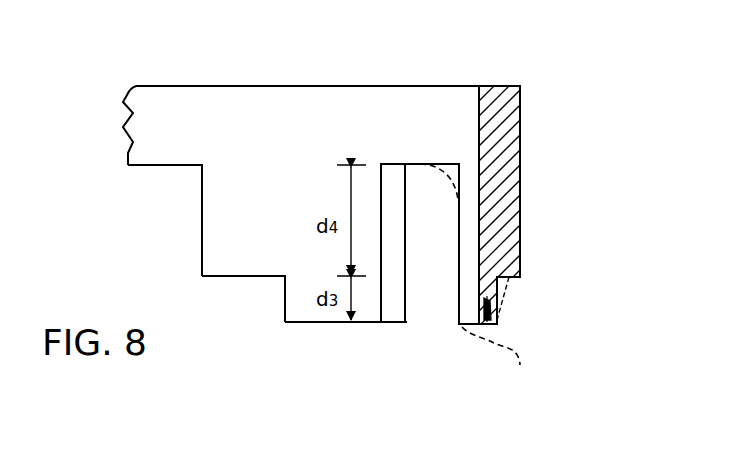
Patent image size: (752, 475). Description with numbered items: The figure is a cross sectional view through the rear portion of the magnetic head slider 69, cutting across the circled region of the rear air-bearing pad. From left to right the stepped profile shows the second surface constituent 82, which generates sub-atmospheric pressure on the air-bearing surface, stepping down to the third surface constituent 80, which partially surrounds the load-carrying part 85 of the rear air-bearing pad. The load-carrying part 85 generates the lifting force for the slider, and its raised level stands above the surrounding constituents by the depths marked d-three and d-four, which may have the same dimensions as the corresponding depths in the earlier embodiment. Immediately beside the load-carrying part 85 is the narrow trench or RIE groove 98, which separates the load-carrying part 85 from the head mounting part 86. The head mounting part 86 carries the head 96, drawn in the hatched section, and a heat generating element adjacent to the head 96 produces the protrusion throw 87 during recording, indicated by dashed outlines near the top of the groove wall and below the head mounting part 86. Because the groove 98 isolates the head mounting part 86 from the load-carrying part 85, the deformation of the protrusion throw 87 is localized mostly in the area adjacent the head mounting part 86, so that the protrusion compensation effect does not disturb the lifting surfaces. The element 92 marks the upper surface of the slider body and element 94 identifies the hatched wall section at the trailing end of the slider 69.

The magnetic head slider 69 is at (138, 56).
The top surface 92 is at (292, 98).
The second surface constituent 82 is at (157, 166).
The third surface constituent 80 is at (230, 278).
The load-carrying part 85 is at (322, 324).
The groove 98 is at (412, 164).
The protrusion throw 87 is at (447, 164).
The hatched wall section 94 is at (502, 86).
The head mounting part 86 is at (464, 326).
The head 96 is at (492, 310).